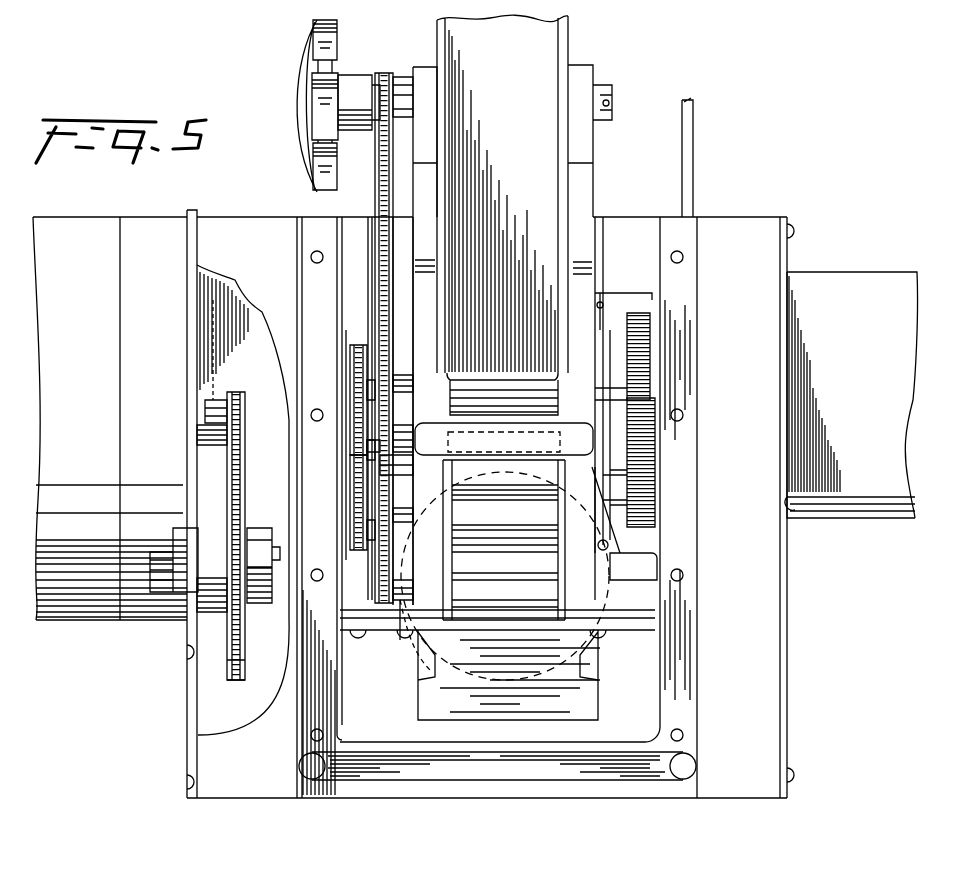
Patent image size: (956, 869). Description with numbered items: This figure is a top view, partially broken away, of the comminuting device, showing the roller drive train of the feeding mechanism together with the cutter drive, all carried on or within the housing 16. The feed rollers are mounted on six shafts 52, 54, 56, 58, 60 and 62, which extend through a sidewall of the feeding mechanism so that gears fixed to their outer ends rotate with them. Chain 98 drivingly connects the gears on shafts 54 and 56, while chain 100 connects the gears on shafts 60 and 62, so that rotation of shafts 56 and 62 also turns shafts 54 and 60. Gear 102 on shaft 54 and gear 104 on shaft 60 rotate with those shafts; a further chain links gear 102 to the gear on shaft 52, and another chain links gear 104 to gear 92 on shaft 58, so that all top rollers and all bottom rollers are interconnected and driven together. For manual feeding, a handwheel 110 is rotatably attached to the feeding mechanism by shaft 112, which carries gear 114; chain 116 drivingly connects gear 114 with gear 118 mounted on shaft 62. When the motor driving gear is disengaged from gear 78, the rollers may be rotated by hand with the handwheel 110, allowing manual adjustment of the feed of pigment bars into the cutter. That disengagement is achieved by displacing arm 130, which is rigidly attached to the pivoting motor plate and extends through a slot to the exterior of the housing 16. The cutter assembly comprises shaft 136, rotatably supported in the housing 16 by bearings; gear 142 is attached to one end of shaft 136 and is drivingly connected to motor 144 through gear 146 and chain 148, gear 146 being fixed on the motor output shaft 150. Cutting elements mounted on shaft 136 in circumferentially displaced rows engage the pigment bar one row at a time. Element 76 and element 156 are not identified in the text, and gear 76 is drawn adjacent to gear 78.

The housing 16 is at (722, 218).
The shaft 52 is at (395, 592).
The shaft 54 is at (382, 525).
The shaft 56 is at (383, 443).
The shaft 58 is at (505, 340).
The shaft 60 is at (368, 365).
The shaft 62 is at (368, 290).
The large gear 76 is at (640, 470).
The gear 78 is at (640, 350).
The gear 92 is at (598, 137).
The chain 98 is at (358, 510).
The chain 100 is at (297, 290).
The gear 102 is at (395, 543).
The gear 104 is at (393, 412).
The handwheel 110 is at (300, 140).
The shaft 112 is at (398, 88).
The gear 114 is at (386, 73).
The chain 116 is at (393, 163).
The gear 118 is at (393, 370).
The arm 130 is at (690, 105).
The shaft 136 is at (277, 557).
The gear 142 is at (230, 665).
The motor 144 is at (92, 620).
The gear 146 is at (215, 403).
The chain 148 is at (232, 498).
The output shaft 150 is at (205, 427).
The cover 156 is at (659, 300).